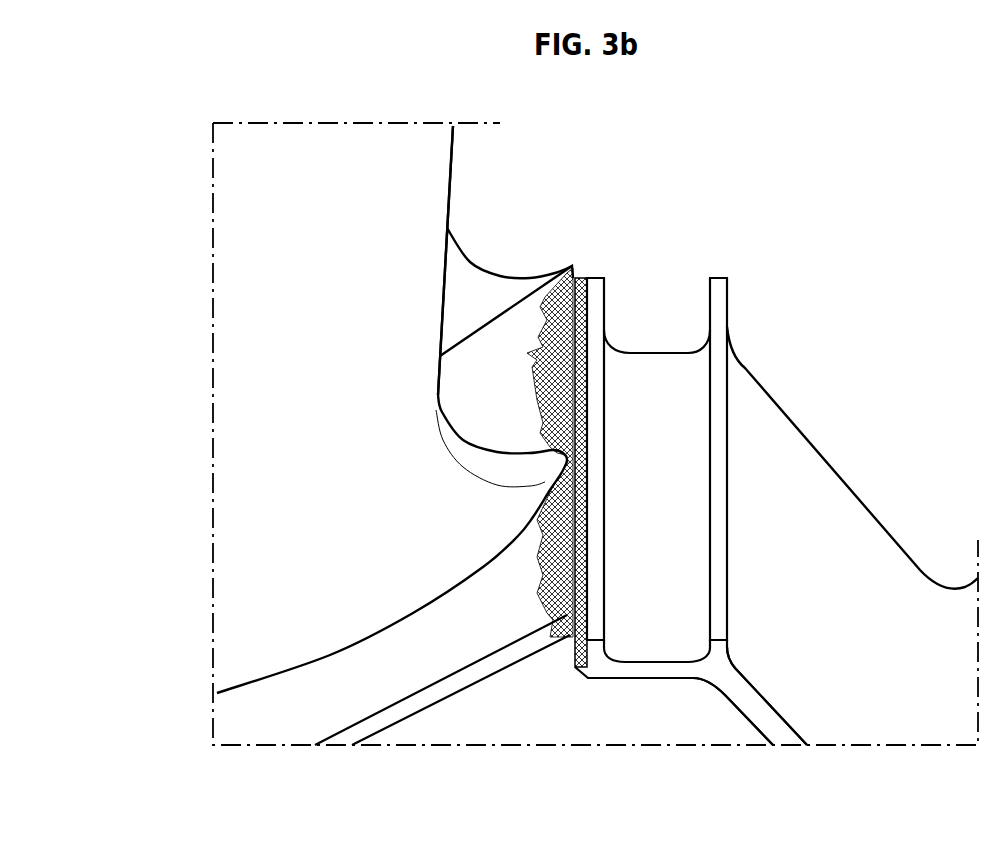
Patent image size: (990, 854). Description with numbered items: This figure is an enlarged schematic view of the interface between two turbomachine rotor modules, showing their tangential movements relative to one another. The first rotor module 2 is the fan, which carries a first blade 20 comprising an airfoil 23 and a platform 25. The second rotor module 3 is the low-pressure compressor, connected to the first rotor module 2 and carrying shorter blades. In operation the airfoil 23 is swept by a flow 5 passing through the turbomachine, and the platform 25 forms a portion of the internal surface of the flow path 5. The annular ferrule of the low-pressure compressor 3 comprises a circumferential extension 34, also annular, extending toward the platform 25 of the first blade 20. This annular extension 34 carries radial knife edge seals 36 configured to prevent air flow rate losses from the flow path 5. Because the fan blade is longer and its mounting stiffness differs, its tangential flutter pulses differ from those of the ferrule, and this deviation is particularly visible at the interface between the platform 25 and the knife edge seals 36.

The first rotor module 2 is at (247, 793).
The second rotor module 3 is at (856, 301).
The flow path 5 is at (666, 262).
The first blade 20 is at (126, 455).
The airfoil 23 is at (338, 390).
The platform 25 is at (513, 390).
The circumferential extension 34 is at (829, 598).
The knife edge seals 36 is at (733, 309).